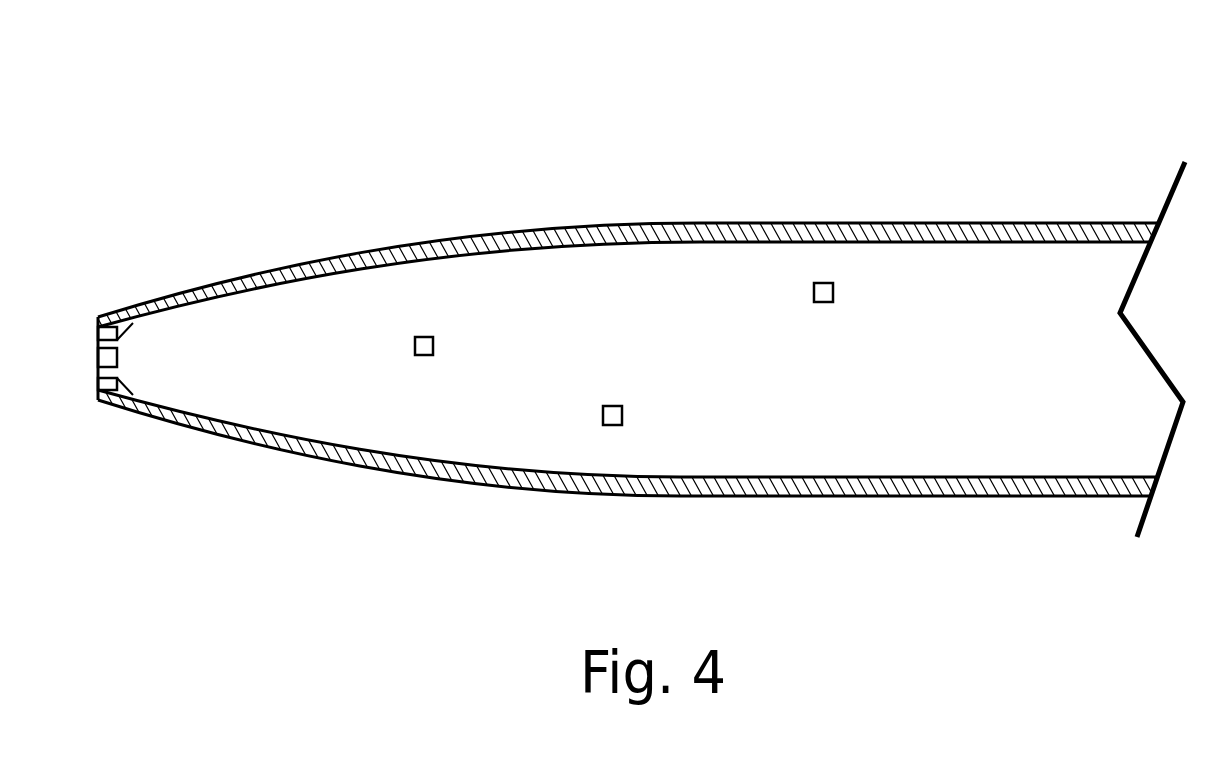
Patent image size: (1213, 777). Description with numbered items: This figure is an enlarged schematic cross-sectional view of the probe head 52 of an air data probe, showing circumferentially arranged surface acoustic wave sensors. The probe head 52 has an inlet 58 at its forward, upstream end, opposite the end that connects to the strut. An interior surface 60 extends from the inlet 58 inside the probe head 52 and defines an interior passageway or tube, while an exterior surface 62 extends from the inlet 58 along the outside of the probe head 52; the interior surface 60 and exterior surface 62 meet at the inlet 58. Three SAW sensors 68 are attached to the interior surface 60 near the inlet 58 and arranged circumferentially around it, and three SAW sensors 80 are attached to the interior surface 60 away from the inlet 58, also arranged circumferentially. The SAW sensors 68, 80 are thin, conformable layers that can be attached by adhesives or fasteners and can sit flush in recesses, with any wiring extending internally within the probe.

The probe head 52 is at (606, 300).
The inlet 58 is at (98, 318).
The interior surface 60 is at (955, 476).
The exterior surface 62 is at (797, 225).
The SAW sensors 68 is at (138, 326).
The SAW sensors 80 is at (424, 337).